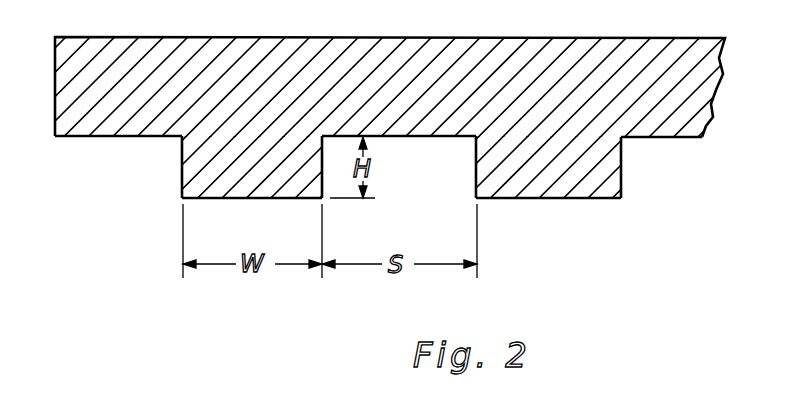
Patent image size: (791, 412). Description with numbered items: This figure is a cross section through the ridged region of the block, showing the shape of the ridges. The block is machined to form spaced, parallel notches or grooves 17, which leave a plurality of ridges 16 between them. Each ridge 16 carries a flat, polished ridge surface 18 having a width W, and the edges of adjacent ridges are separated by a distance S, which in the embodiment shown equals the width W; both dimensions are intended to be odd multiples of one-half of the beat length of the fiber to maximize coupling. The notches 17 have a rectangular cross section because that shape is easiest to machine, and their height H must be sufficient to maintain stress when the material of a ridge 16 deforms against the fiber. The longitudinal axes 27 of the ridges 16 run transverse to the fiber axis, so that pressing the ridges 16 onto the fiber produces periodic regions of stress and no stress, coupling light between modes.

The ridge 16 is at (197, 162).
The notch 17 is at (426, 138).
The polished ridge surface 18 is at (276, 198).
The longitudinal axis of the ridge 27 is at (252, 154).